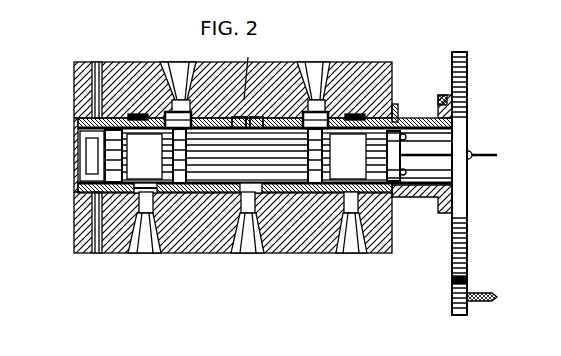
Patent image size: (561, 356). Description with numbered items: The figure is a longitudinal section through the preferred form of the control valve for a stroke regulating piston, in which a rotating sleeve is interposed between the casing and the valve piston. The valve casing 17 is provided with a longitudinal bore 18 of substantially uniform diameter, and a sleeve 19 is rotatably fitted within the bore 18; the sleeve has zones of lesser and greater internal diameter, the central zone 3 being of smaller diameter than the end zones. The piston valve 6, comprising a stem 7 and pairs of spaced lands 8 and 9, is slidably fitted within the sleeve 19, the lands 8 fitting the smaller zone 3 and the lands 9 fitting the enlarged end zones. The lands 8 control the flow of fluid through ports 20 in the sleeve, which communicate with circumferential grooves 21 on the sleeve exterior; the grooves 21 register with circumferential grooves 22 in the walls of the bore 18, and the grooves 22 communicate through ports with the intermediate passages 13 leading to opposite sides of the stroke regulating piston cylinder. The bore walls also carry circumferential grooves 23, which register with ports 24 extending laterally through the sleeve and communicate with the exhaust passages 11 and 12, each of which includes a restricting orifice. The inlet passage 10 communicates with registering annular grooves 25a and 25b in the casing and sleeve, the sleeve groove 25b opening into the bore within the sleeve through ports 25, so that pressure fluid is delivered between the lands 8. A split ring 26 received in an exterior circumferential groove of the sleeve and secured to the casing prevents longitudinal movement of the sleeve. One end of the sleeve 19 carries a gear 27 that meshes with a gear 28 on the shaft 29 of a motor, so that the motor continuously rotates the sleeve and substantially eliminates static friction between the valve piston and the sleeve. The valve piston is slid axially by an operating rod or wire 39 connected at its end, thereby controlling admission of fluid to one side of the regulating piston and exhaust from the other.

The zone of lesser diameter 3 is at (248, 47).
The piston valve 6 is at (205, 172).
The stem 7 is at (258, 156).
The lands 8 is at (186, 172).
The lands 9 is at (120, 172).
The inlet passage 10 is at (242, 253).
The exhaust passage 11 is at (148, 253).
The exhaust passage 12 is at (343, 253).
The intermediate passages 13 is at (177, 62).
The valve casing 17 is at (373, 68).
The longitudinal bore 18 is at (392, 92).
The sleeve 19 is at (468, 113).
The ports 20 is at (188, 145).
The circumferential grooves 21 is at (192, 116).
The circumferential grooves 22 is at (292, 110).
The circumferential grooves 23 is at (138, 114).
The ports 24 is at (246, 156).
The ports 25 is at (256, 117).
The annular groove 25a is at (258, 194).
The annular groove 25b is at (240, 171).
The split ring 26 is at (398, 112).
The gear 27 is at (462, 66).
The gear 28 is at (452, 281).
The shaft 29 is at (487, 293).
The operating rod 39 is at (443, 155).